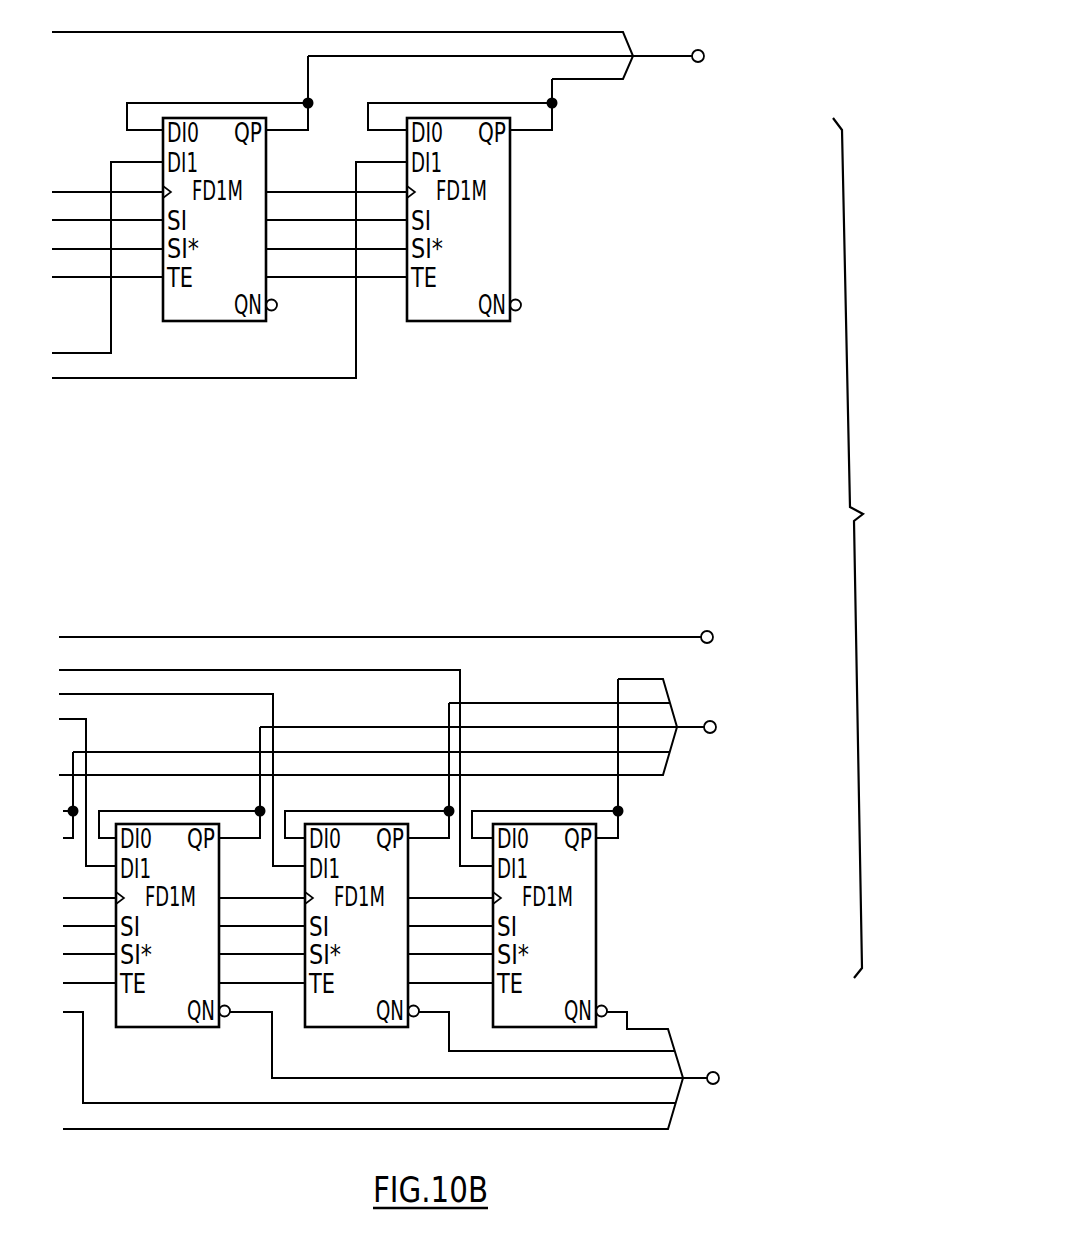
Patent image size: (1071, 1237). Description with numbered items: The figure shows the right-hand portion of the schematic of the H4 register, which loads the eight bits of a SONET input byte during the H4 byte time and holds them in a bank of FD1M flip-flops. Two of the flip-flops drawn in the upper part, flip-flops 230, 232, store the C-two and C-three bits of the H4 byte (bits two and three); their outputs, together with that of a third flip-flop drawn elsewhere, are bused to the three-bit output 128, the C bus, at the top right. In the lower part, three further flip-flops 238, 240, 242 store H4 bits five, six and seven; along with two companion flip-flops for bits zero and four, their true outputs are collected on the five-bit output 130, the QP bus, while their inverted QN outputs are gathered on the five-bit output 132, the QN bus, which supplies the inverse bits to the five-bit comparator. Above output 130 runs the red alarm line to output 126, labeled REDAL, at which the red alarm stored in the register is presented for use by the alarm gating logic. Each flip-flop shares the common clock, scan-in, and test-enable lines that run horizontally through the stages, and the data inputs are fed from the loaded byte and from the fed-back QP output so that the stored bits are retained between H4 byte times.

The red alarm output 126 is at (707, 643).
The output 128 is at (698, 62).
The output 130 is at (710, 733).
The output 132 is at (716, 1071).
The flip-flop 230 is at (190, 323).
The flip-flop 232 is at (435, 322).
The flip-flop 238 is at (148, 1027).
The flip-flop 240 is at (333, 1027).
The flip-flop 242 is at (528, 1027).